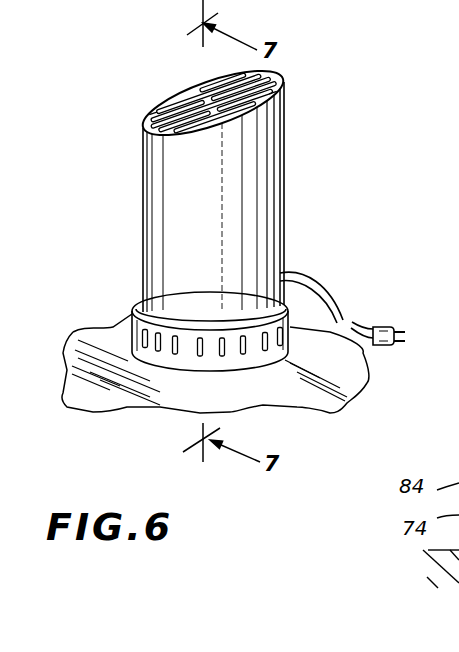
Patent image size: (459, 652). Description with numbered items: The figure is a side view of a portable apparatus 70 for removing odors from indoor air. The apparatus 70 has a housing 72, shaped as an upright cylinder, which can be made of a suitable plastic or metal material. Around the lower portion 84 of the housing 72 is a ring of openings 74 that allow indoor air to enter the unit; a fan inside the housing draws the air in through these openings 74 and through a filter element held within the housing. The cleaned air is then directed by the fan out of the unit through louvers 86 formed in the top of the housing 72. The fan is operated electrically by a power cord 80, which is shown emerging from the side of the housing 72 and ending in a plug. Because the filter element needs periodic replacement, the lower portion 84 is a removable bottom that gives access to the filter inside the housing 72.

The portable apparatus 70 is at (211, 230).
The housing 72 is at (270, 222).
The openings 74 is at (223, 356).
The power cord 80 is at (332, 304).
The lower portion 84 is at (186, 338).
The louvers 86 is at (191, 109).